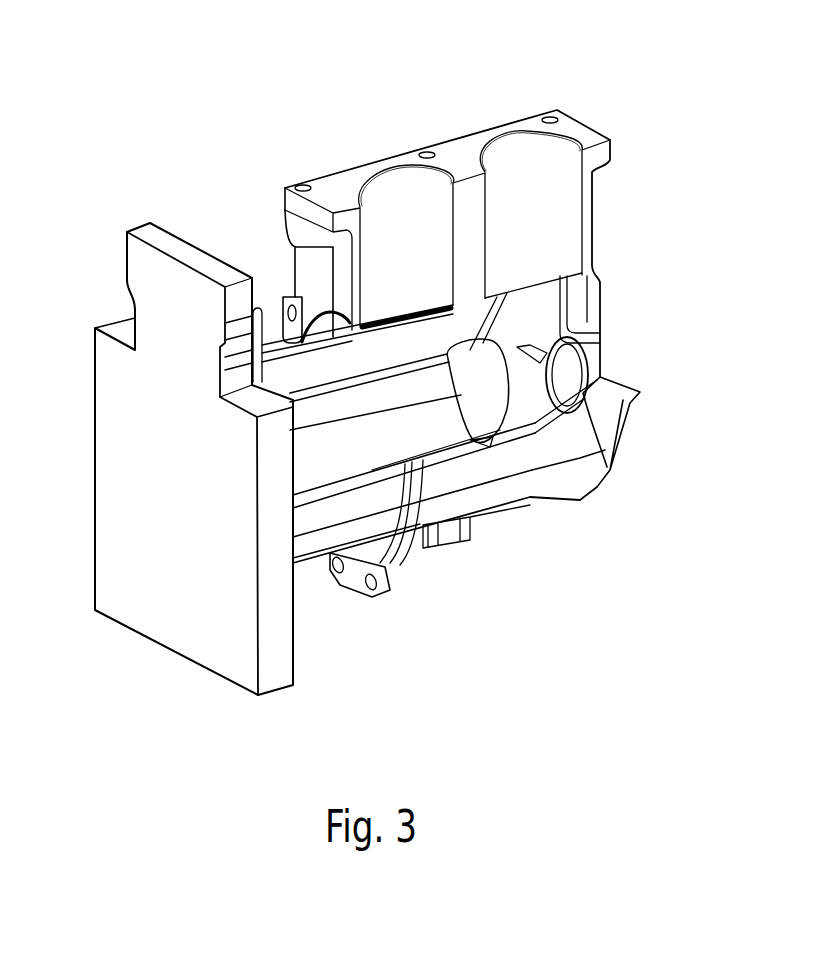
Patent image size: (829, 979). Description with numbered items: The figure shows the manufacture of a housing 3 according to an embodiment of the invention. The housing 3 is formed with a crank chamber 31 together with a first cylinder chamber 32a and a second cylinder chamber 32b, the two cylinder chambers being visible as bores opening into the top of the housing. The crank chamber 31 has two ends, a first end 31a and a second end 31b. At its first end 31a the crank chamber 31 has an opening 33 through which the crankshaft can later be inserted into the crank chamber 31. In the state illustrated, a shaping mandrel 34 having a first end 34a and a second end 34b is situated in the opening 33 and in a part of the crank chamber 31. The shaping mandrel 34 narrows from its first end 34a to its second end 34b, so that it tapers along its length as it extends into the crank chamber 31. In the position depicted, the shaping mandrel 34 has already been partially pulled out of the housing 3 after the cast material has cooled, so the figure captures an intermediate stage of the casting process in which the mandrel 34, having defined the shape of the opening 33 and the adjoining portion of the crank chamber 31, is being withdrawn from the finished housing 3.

The housing 3 is at (619, 131).
The crank chamber 31 is at (533, 319).
The end of crank chamber 31a is at (358, 599).
The end of crank chamber 31b is at (611, 337).
The first cylinder chamber 32a is at (403, 247).
The second cylinder chamber 32b is at (523, 200).
The opening 33 is at (328, 458).
The shaping mandrel 34 is at (316, 371).
The end of shaping mandrel 34a is at (309, 566).
The second end of shaping mandrel 34b is at (497, 389).